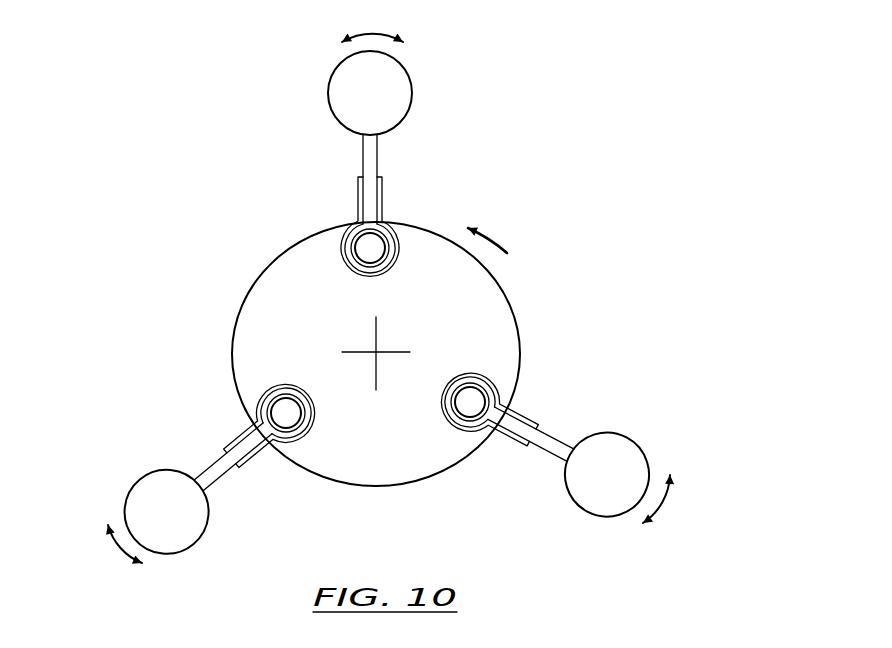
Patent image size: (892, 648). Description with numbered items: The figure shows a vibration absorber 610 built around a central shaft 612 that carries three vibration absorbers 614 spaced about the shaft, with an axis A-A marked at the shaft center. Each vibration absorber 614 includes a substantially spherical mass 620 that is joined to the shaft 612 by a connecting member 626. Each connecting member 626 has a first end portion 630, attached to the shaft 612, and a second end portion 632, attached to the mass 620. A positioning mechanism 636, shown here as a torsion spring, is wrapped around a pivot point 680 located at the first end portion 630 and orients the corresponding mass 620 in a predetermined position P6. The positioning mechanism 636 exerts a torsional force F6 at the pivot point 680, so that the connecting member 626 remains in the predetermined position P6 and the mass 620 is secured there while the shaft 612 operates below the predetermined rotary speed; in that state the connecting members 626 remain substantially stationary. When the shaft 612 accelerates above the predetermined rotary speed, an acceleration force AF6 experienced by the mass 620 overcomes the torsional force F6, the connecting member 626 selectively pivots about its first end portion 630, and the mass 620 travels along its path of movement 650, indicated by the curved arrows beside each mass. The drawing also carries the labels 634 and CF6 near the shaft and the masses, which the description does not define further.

The vibration absorber 610 is at (645, 192).
The shaft 612 is at (518, 318).
The vibration absorbers 614 is at (443, 87).
The mass 620 is at (340, 78).
The connecting member 626 is at (363, 167).
The first end portion 630 is at (368, 248).
The second end portion 632 is at (372, 142).
The inner region of hub 634 is at (320, 453).
The positioning mechanism 636 is at (432, 212).
The path of movement 650 is at (373, 30).
The pivot point 680 is at (365, 275).
The predetermined position P6 is at (393, 72).
The torsional force F6 is at (343, 157).
The acceleration force AF6 is at (333, 202).
The centrifugal force CF6 is at (597, 393).
The axis of rotation A-A is at (380, 348).